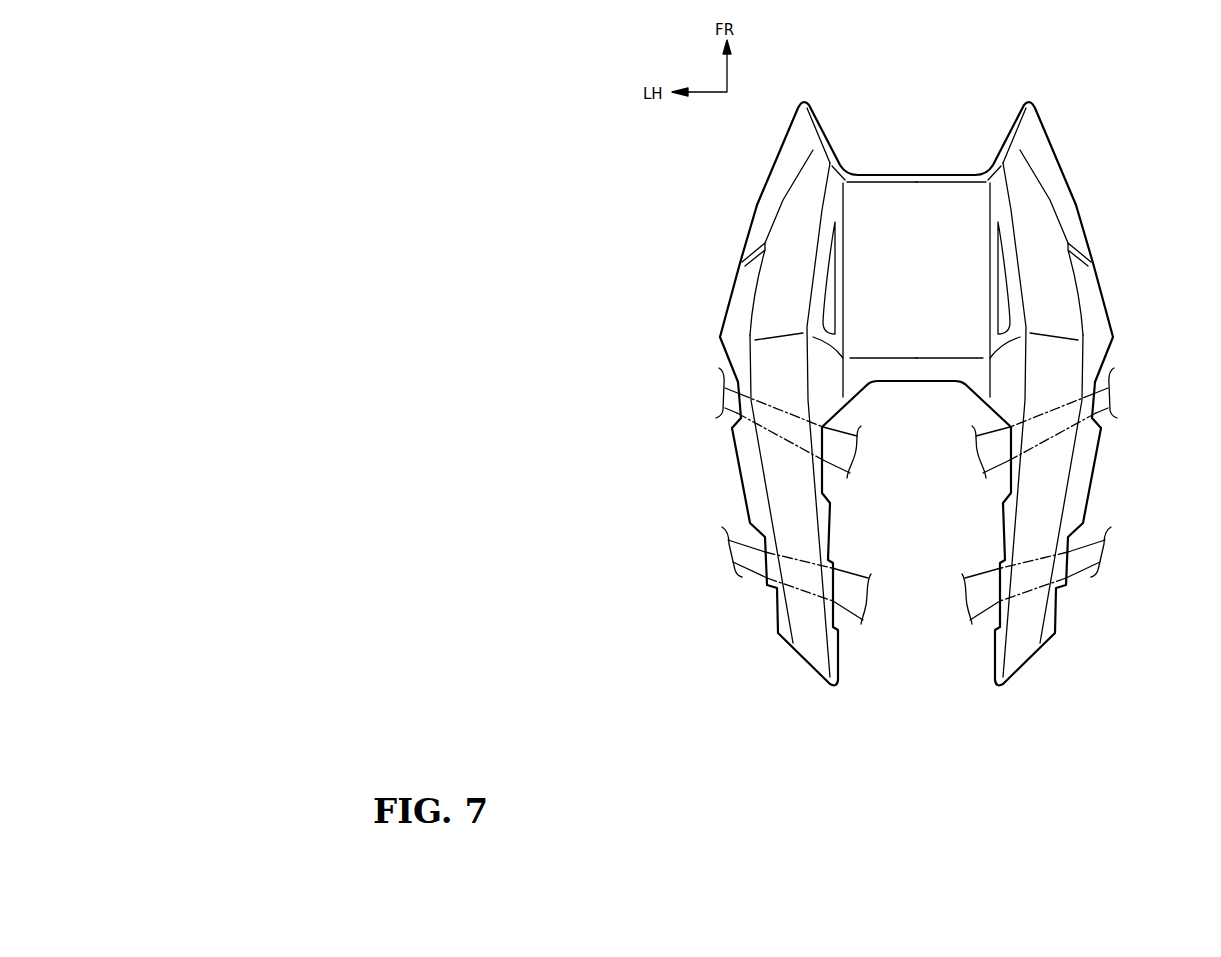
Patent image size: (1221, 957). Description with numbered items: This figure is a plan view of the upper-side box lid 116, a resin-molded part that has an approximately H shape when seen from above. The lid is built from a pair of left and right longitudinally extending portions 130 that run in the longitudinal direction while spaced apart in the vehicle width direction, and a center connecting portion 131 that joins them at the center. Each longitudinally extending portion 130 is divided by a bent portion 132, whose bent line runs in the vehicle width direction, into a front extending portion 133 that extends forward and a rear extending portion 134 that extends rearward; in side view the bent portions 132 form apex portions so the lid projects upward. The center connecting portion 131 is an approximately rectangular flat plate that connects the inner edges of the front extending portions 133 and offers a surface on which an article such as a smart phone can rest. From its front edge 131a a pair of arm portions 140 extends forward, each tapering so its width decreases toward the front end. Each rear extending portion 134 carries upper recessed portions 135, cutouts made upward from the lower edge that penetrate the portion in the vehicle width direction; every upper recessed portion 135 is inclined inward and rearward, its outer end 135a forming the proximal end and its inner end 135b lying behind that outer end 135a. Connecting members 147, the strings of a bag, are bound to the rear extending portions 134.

The upper-side box lid 116 is at (932, 56).
The longitudinally extending portion 130 is at (718, 307).
The center connecting portion 131 is at (943, 212).
The front edge 131a is at (897, 174).
The bent portion 132 is at (787, 333).
The front extending portion 133 is at (787, 253).
The rear extending portion 134 is at (787, 488).
The upper recessed portion 135 is at (733, 399).
The outer end 135a is at (724, 393).
The inner end 135b is at (826, 478).
The arm portion 140 is at (792, 133).
The connecting member 147 is at (733, 424).